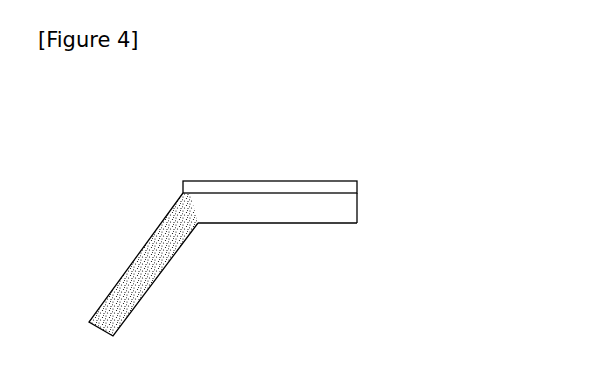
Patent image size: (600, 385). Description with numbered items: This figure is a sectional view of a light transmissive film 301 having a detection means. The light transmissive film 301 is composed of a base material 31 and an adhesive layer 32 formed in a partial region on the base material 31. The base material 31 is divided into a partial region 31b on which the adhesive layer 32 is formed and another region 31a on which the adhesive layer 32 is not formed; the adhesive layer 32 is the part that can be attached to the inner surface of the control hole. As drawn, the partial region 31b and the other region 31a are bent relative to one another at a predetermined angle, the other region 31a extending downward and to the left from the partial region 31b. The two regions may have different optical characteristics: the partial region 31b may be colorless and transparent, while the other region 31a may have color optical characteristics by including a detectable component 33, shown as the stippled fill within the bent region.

The light transmissive film 301 is at (349, 136).
The base material 31 is at (348, 207).
The other region 31a is at (114, 282).
The partial region 31b is at (313, 224).
The adhesive layer 32 is at (295, 188).
The detectable component 33 is at (148, 272).